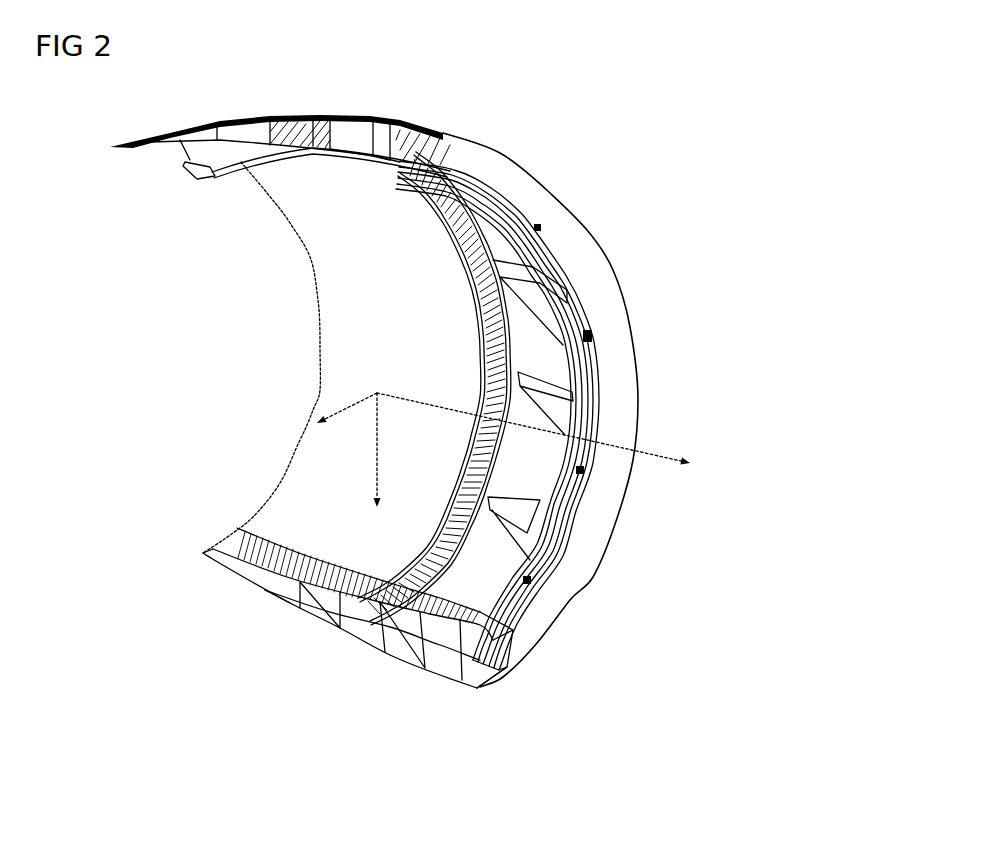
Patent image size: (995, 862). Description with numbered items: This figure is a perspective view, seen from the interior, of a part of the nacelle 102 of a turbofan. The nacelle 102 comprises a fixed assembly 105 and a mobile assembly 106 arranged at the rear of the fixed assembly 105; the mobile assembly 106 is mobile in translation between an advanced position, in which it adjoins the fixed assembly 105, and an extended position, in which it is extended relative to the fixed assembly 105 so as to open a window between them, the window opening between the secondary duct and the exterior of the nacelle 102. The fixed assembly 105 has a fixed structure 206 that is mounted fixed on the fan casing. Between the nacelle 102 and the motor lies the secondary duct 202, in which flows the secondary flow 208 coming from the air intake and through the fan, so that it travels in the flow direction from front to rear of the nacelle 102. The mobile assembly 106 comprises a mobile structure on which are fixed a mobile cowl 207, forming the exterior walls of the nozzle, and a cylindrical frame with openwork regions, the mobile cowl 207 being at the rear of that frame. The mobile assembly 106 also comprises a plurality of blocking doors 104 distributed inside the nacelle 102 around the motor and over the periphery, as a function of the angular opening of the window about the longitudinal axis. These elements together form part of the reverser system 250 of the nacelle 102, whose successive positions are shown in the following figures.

The nacelle 102 is at (172, 633).
The blocking doors 104 is at (533, 326).
The fixed assembly 105 is at (672, 248).
The mobile assembly 106 is at (170, 392).
The secondary duct 202 is at (306, 220).
The fixed structure 206 is at (580, 532).
The mobile cowl 207 is at (343, 370).
The secondary flow 208 is at (452, 323).
The reverser system 250 is at (307, 687).